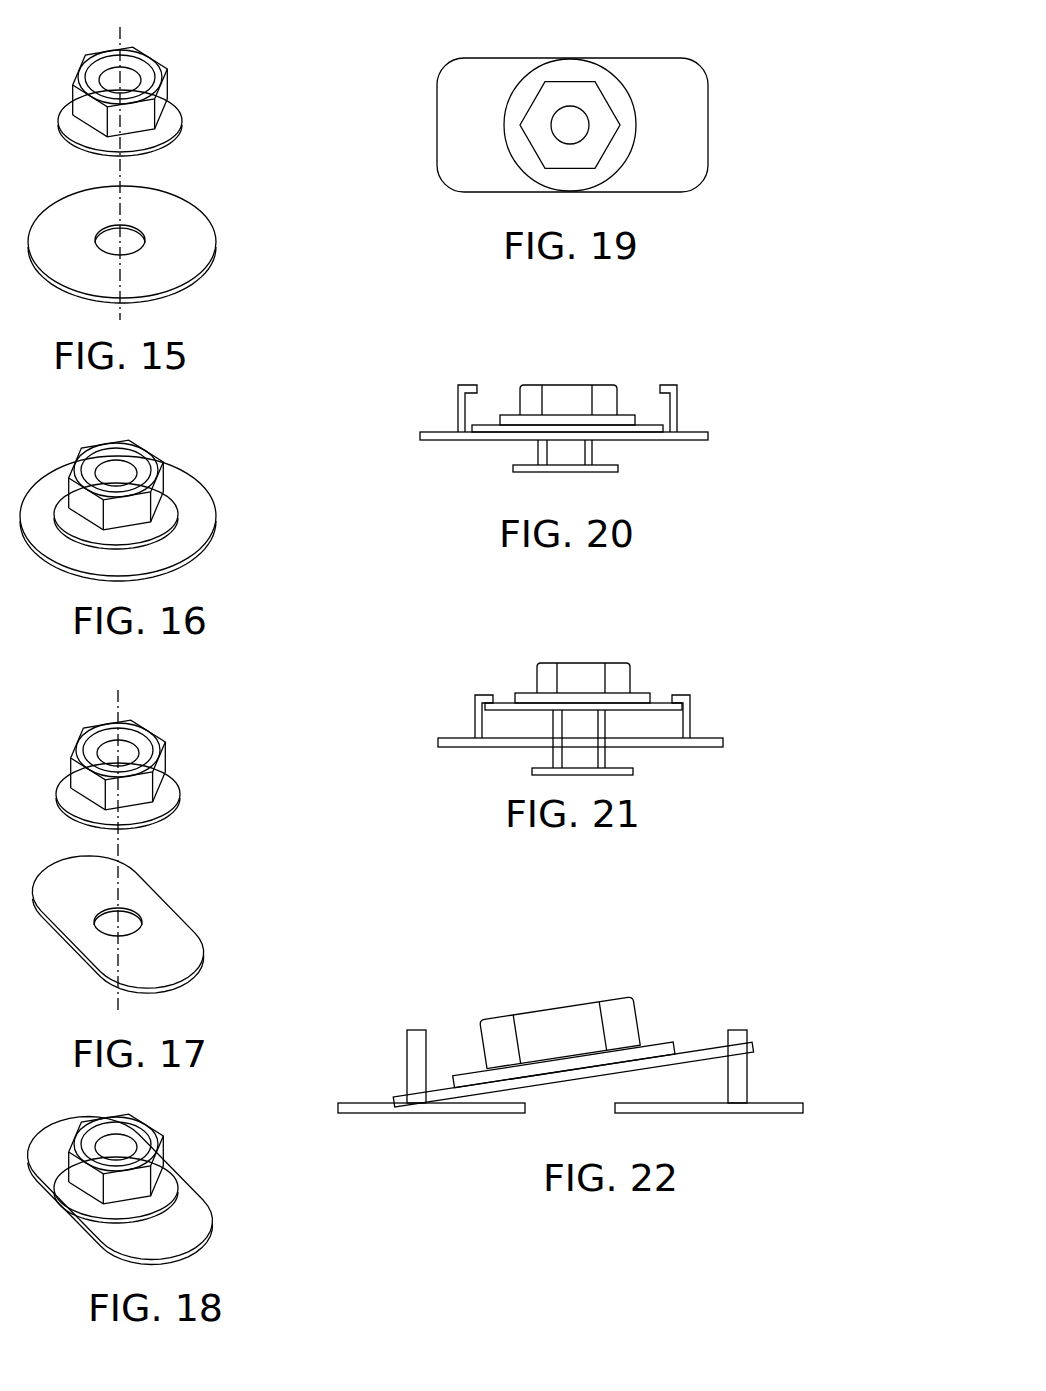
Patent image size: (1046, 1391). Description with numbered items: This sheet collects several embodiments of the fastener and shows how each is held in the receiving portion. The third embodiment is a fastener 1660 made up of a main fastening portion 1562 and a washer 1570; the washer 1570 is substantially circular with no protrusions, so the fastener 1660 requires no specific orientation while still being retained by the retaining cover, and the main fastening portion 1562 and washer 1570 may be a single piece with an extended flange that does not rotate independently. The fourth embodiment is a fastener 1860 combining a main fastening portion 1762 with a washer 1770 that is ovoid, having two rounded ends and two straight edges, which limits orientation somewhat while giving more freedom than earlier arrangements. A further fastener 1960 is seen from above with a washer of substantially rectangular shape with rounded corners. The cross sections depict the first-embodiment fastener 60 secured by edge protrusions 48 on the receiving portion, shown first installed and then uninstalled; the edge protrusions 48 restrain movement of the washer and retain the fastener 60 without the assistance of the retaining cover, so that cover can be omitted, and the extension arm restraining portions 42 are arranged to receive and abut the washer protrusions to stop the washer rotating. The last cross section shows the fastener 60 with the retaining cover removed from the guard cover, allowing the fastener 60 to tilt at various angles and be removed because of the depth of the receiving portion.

In FIG. 15, the main fastening portion 1562 is at (183, 100).
In FIG. 15, the washer 1570 is at (195, 168).
In FIG. 16, the fastener 1660 is at (155, 443).
In FIG. 17, the main fastening portion 1762 is at (178, 775).
In FIG. 17, the washer 1770 is at (184, 889).
In FIG. 18, the fastener 1860 is at (175, 1136).
In FIG. 19, the fastener 1960 is at (592, 40).
In FIG. 20, the edge protrusions 48 is at (468, 383).
In FIG. 21, the edge protrusions 48 is at (482, 695).
In FIG. 20, the extension arm restraining portions 42 is at (680, 402).
In FIG. 21, the extension arm restraining portions 42 is at (692, 705).
In FIG. 22, the fastener 60 is at (627, 998).